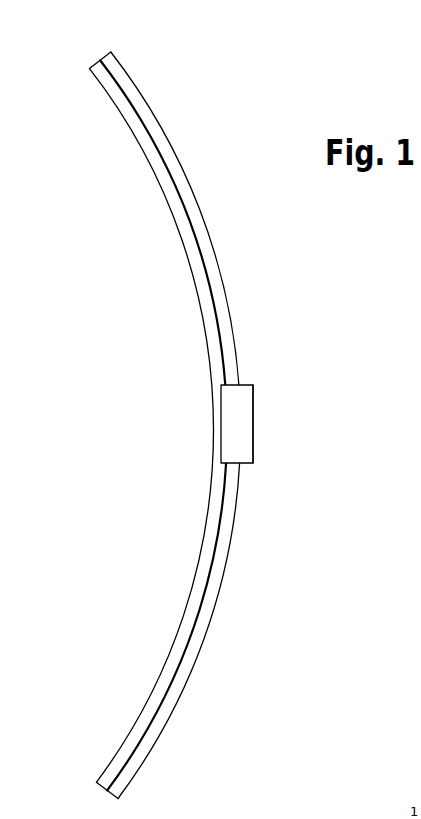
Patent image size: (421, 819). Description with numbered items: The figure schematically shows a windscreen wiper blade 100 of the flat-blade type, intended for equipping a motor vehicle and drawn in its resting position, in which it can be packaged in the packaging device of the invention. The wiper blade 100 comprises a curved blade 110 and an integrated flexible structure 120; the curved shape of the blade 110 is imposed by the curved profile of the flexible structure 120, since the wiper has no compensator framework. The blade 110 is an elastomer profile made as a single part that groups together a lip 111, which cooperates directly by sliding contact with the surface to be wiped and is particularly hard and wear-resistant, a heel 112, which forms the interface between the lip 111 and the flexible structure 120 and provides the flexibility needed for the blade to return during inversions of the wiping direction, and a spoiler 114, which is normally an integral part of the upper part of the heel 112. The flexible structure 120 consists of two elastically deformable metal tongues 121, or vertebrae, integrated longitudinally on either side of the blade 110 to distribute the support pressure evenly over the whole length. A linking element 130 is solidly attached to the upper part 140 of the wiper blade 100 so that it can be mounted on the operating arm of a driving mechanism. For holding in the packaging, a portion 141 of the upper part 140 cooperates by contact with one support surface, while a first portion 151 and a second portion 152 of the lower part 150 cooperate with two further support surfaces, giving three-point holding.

The windscreen wiper blade 100 is at (162, 79).
The curved blade 110 is at (171, 212).
The lip 111 is at (184, 623).
The heel 112 is at (218, 552).
The spoiler 114 is at (193, 673).
The flexible structure 120 is at (170, 152).
The elastically deformable tongue 121 is at (151, 728).
The linking element 130 is at (243, 407).
The upper part 140 is at (248, 342).
The portion of the upper part 141 is at (253, 445).
The lower part 150 is at (188, 348).
The first portion of the lower part 151 is at (104, 87).
The second portion of the lower part 152 is at (123, 767).